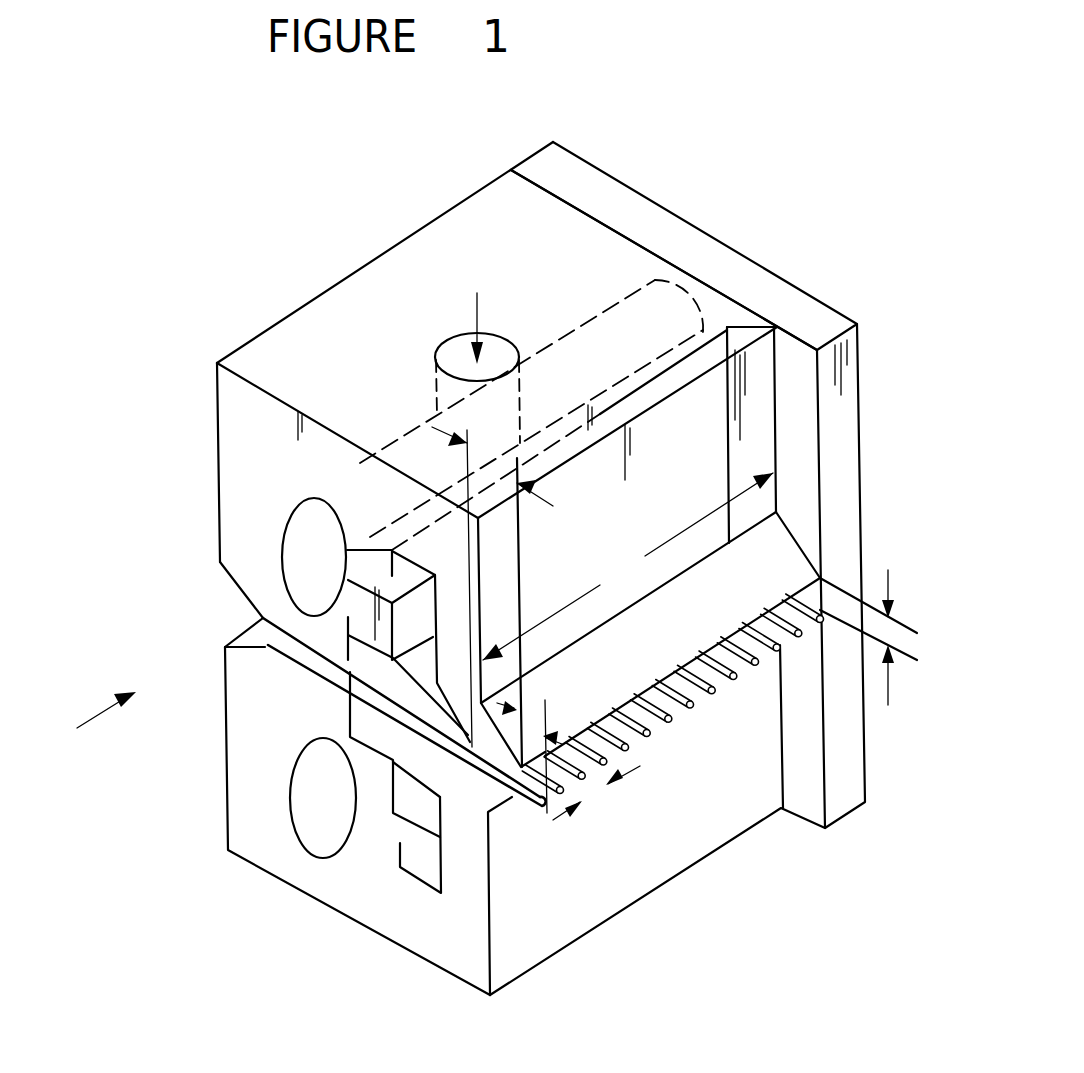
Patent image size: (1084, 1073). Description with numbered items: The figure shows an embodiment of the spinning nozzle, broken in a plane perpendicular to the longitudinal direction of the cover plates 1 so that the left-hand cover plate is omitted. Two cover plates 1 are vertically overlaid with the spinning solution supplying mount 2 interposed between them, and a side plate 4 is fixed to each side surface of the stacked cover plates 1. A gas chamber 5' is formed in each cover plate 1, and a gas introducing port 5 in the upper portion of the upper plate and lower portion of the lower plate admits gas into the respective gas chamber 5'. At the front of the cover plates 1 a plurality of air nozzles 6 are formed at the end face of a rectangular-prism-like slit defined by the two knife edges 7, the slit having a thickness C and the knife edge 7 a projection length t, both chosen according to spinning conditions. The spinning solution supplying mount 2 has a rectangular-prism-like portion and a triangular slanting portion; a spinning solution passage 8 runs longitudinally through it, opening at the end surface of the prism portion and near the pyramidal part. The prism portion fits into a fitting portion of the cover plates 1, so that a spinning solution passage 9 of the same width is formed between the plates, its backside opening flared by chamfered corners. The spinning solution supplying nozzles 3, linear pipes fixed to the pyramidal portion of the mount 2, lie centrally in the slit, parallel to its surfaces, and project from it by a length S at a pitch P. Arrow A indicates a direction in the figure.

The cover plate 1 is at (310, 333).
The spinning solution supplying mount 2 is at (372, 730).
The spinning solution supplying nozzles 3 is at (671, 722).
The side plate 4 is at (840, 495).
The gas introducing port 5 is at (426, 335).
The gas chamber 5' is at (440, 569).
The air nozzles 6 is at (707, 673).
The knife edge 7 is at (763, 588).
The spinning solution passage 8 is at (405, 722).
The spinning solution passage 9 is at (263, 620).
The length of projection of knife edge t is at (492, 587).
The length of projection of nozzles S is at (529, 756).
The pitch of nozzles P is at (596, 800).
The thickness of slit C is at (909, 637).
The direction arrow A is at (96, 721).